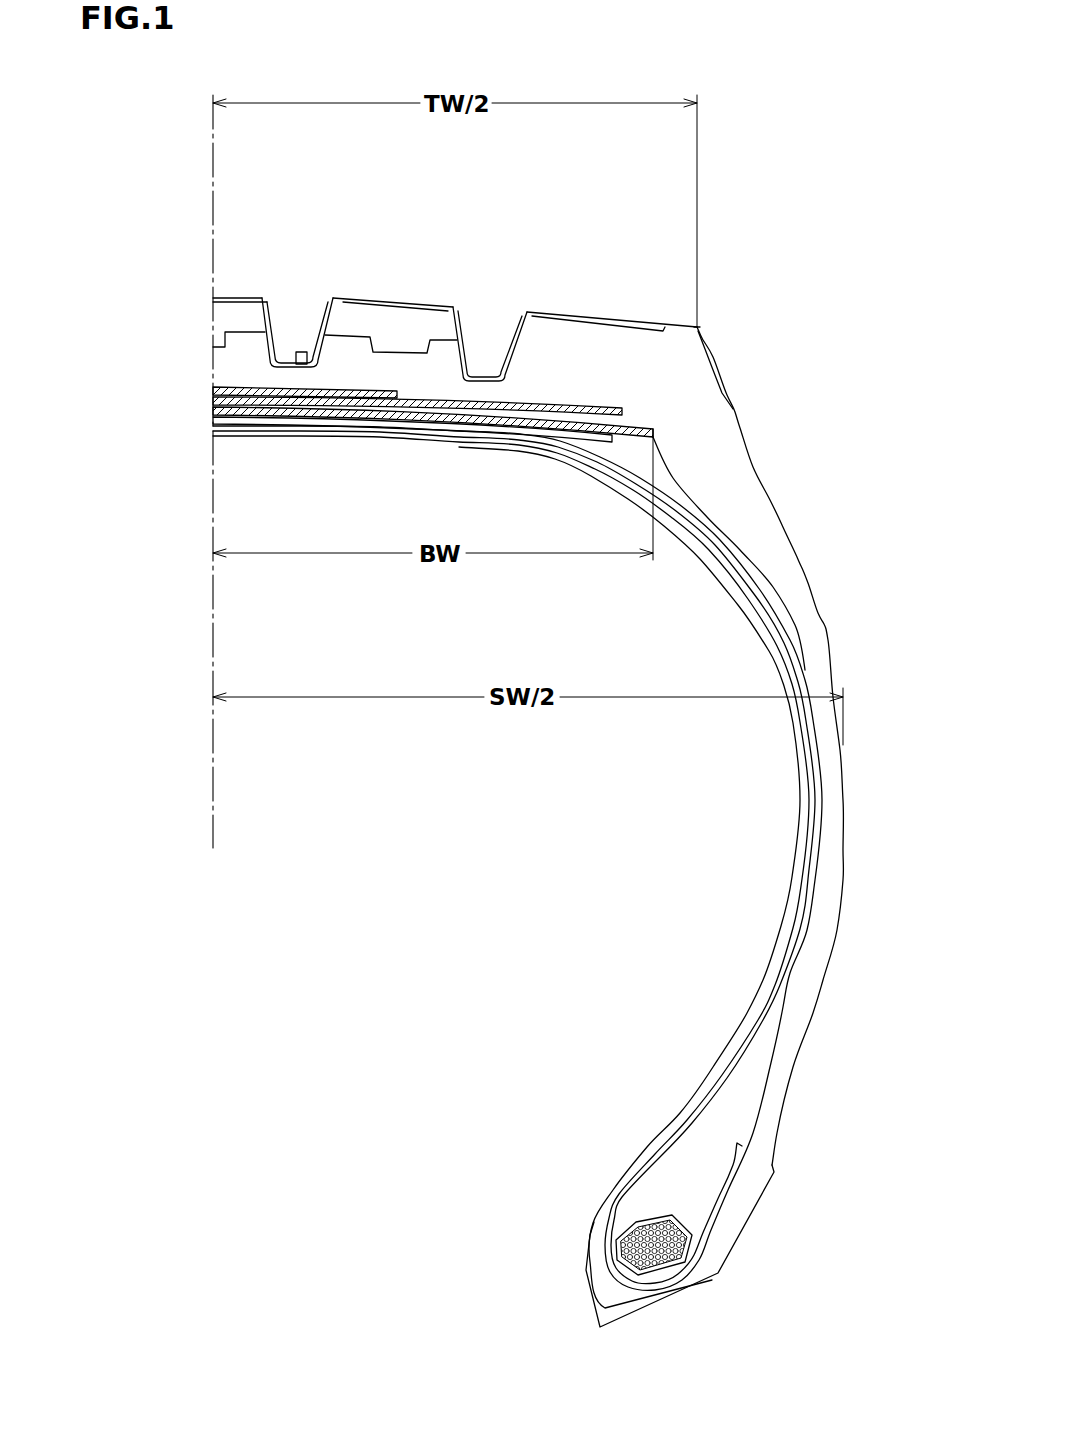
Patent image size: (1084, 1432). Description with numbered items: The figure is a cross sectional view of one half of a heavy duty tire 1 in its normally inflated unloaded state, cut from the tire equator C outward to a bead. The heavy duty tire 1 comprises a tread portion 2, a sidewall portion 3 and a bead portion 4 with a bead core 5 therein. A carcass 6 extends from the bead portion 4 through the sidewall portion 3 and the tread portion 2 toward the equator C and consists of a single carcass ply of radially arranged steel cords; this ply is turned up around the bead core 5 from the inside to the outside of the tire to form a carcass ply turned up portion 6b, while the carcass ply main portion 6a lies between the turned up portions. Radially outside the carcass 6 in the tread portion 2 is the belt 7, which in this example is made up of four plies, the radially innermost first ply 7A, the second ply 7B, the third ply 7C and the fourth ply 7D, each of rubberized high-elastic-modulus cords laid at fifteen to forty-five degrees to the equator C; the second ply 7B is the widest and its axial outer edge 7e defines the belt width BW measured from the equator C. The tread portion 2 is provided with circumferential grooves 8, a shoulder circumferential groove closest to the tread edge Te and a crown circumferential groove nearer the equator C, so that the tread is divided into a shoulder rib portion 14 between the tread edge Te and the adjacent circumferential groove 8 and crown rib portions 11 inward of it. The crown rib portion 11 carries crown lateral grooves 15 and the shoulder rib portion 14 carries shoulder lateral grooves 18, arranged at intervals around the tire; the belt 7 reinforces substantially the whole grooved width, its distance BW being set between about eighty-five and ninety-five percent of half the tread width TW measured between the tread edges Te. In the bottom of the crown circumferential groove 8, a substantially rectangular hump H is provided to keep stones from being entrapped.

The heavy duty tire 1 is at (796, 310).
The tread portion 2 is at (616, 277).
The sidewall portion 3 is at (859, 654).
The bead portion 4 is at (805, 1192).
The bead core 5 is at (616, 1245).
The carcass 6 is at (568, 997).
The carcass ply main portion 6a is at (742, 1023).
The carcass ply turned up portion 6b is at (735, 1146).
The belt 7 is at (132, 349).
The first belt ply 7A is at (213, 421).
The second belt ply 7B is at (213, 411).
The third belt ply 7C is at (213, 401).
The fourth belt ply 7D is at (213, 390).
The axial outer edge of the belt 7e is at (654, 432).
The circumferential groove 8 is at (322, 297).
The crown rib portion 11 is at (228, 318).
The shoulder rib portion 14 is at (671, 330).
The crown lateral groove 15 is at (262, 300).
The shoulder lateral groove 18 is at (553, 315).
The tire equator C is at (208, 178).
The hump H is at (302, 352).
The tread edge Te is at (698, 325).